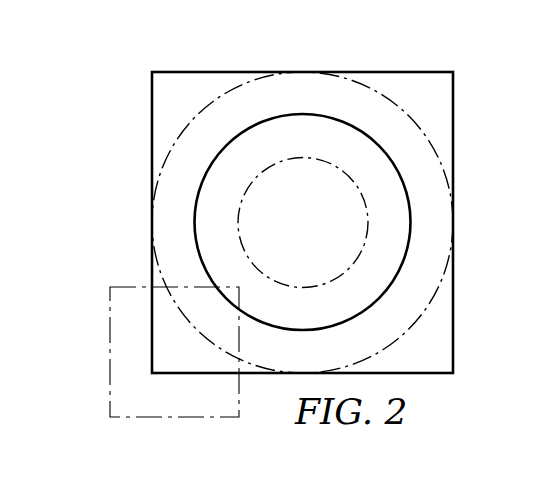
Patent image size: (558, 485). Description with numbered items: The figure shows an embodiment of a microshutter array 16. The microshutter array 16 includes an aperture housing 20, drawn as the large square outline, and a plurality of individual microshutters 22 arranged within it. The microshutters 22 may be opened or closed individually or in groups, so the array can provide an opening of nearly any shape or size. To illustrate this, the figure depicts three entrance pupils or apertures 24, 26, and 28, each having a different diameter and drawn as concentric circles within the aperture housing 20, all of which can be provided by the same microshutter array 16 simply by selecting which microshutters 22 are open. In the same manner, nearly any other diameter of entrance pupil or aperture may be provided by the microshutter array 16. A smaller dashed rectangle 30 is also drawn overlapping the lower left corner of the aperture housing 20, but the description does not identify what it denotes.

The microshutter array 16 is at (497, 126).
The aperture housing 20 is at (405, 72).
The microshutters 22 is at (432, 339).
The entrance pupil or aperture 24 is at (173, 222).
The entrance pupil or aperture 26 is at (388, 223).
The entrance pupil or aperture 28 is at (316, 236).
The auxiliary block 30 is at (110, 393).